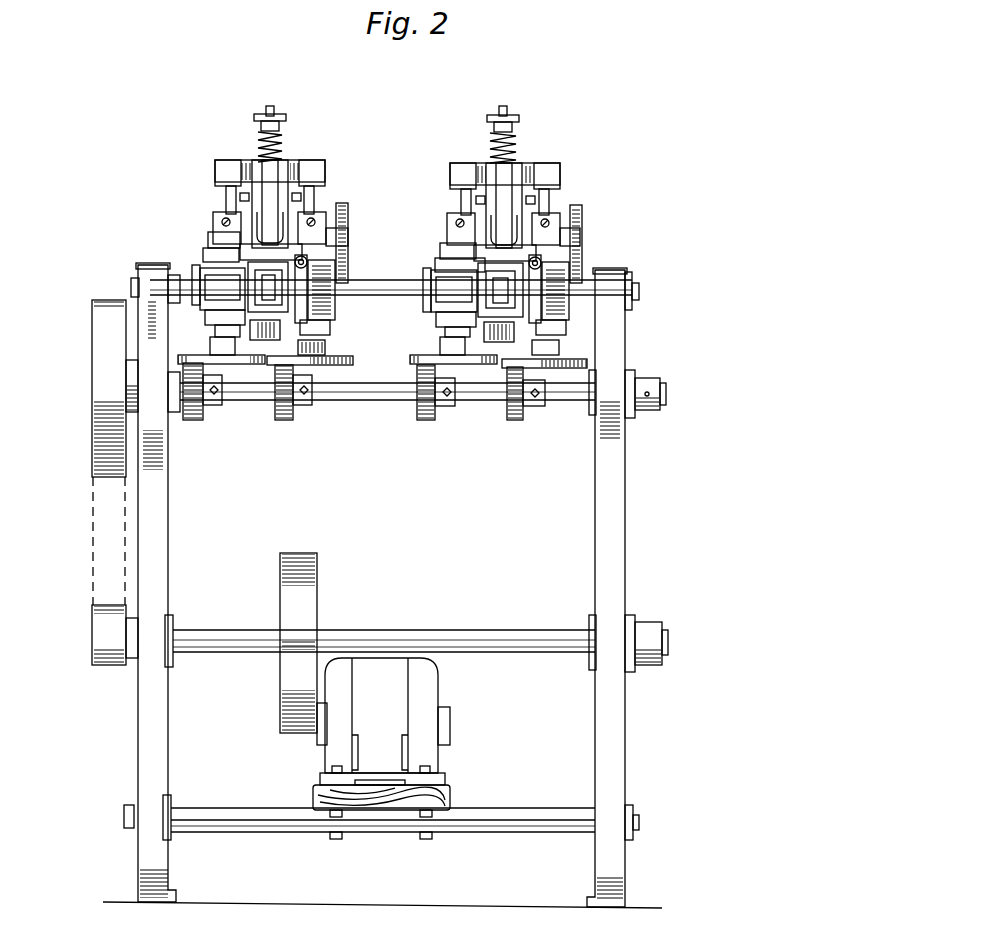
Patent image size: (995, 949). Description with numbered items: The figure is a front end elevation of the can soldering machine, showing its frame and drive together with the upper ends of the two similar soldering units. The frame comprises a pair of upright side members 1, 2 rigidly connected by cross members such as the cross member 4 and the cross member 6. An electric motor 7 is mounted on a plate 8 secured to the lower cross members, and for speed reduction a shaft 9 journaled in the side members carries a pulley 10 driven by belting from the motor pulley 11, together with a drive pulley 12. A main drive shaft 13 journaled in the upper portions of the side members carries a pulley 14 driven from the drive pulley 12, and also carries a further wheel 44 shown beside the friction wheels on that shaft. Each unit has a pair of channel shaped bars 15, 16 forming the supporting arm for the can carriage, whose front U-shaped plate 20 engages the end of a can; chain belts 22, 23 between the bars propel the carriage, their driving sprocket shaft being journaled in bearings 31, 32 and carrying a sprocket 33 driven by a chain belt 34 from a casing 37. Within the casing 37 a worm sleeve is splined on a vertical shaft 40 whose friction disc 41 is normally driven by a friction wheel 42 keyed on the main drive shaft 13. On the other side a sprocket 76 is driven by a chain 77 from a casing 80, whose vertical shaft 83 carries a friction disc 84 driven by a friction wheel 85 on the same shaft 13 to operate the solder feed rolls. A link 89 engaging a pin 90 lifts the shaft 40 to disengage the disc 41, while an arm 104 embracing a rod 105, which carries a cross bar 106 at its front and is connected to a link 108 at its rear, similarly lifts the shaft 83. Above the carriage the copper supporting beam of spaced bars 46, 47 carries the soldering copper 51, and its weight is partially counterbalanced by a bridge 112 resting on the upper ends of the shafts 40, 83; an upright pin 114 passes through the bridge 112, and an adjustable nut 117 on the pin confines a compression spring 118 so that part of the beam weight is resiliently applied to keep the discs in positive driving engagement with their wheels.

The upright side member 1 is at (140, 714).
The upright side member 2 is at (622, 553).
The cross member 4 is at (206, 822).
The cross member 6 is at (355, 288).
The electric motor 7 is at (440, 694).
The plate 8 is at (452, 797).
The shaft 9 is at (520, 632).
The pulley 10 is at (320, 576).
The motor pulley 11 is at (285, 725).
The drive pulley 12 is at (98, 657).
The main drive shaft 13 is at (355, 400).
The pulley 14 is at (98, 428).
The channel shaped bar 15 is at (480, 301).
The channel shaped bar 16 is at (562, 322).
The U-shaped plate 20 is at (510, 250).
The chain belt 22 is at (585, 258).
The chain belt 23 is at (446, 250).
The bearing 31 is at (440, 300).
The bearing 32 is at (592, 287).
The sprocket 33 is at (445, 262).
The chain belt 34 is at (325, 298).
The casing 37 is at (449, 226).
The vertical shaft 40 is at (455, 205).
The friction disc 41 is at (482, 372).
The friction wheel 42 is at (428, 421).
The gear 44 is at (522, 392).
The beam bar 46 is at (258, 172).
The beam bar 47 is at (302, 185).
The soldering copper 51 is at (272, 170).
The sprocket 76 is at (343, 210).
The chain 77 is at (348, 244).
The casing 80 is at (346, 261).
The vertical shaft 83 is at (320, 193).
The friction disc 84 is at (336, 364).
The friction wheel 85 is at (286, 420).
The link 89 is at (218, 236).
The pin 90 is at (214, 245).
The cross bar 106 is at (206, 257).
The arm 104 is at (300, 312).
The rod 105 is at (578, 242).
The link 108 is at (548, 242).
The bridge 112 is at (216, 170).
The upright pin 114 is at (508, 112).
The adjustable nut 117 is at (490, 118).
The compression spring 118 is at (516, 142).